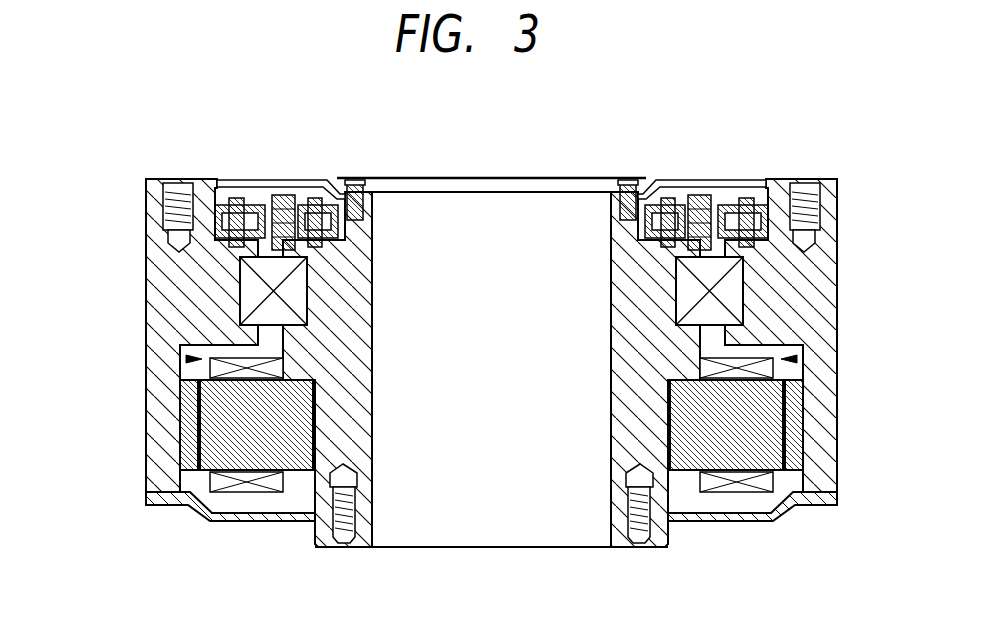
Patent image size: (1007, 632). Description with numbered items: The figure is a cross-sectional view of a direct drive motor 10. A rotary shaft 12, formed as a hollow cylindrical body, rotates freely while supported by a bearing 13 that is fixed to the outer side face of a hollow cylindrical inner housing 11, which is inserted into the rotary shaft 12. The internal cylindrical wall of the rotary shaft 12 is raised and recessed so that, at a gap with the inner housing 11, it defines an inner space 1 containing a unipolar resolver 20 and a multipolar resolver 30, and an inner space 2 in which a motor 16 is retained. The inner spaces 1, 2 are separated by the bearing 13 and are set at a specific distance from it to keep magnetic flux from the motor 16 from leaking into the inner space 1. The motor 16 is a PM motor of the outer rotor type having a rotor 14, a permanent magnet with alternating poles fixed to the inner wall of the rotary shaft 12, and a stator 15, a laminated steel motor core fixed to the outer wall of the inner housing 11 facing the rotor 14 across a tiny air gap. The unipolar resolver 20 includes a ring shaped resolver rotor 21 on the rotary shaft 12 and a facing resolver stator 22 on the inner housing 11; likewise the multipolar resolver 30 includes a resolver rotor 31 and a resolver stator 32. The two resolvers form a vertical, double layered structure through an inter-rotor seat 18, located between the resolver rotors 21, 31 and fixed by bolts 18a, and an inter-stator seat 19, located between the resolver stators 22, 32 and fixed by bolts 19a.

The inner space 1 is at (308, 184).
The inner space 2 is at (178, 362).
The direct drive motor 10 is at (487, 154).
The inner housing 11 is at (343, 413).
The rotary shaft 12 is at (160, 310).
The bearing 13 is at (303, 302).
The rotor 14 is at (192, 470).
The stator 15 is at (228, 457).
The motor 16 is at (486, 477).
The inter-rotor seat 18 is at (452, 234).
The bolts 18a is at (192, 218).
The inter-stator seat 19 is at (481, 221).
The bolts 19a is at (333, 224).
The unipolar resolver 20 is at (270, 166).
The resolver rotor 21 is at (247, 190).
The resolver stator 22 is at (279, 183).
The multipolar resolver 30 is at (709, 165).
The resolver rotor 31 is at (745, 190).
The resolver stator 32 is at (704, 182).